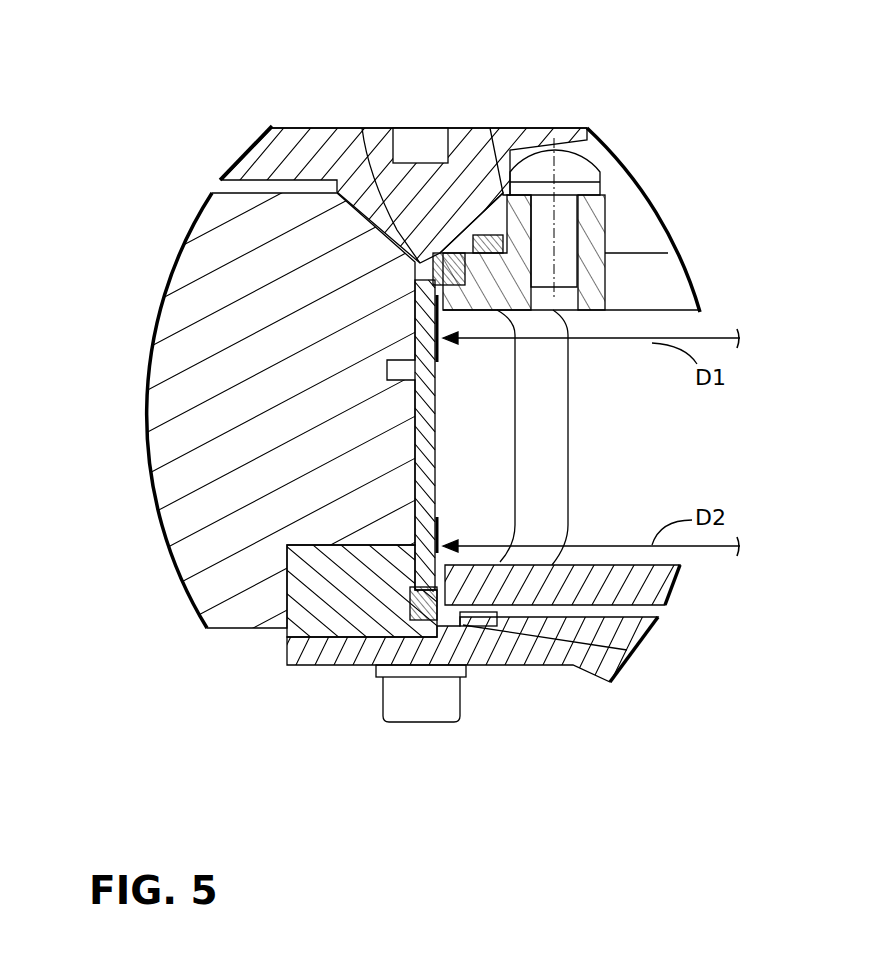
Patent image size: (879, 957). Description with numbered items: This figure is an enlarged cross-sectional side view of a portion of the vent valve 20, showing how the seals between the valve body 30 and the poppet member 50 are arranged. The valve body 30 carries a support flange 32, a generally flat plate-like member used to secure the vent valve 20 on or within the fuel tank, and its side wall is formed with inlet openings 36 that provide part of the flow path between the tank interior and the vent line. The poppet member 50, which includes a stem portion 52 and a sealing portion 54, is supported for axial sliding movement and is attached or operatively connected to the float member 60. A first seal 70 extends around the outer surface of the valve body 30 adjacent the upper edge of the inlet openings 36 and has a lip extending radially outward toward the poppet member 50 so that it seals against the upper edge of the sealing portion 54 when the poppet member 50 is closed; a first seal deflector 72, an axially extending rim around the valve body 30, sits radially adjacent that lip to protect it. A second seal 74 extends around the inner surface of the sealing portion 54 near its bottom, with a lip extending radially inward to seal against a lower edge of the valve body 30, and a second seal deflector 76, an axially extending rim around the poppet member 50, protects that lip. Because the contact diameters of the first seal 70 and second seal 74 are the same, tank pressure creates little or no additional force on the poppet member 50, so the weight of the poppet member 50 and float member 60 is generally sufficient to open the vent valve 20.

The vent valve 20 is at (645, 116).
The valve body 30 is at (592, 286).
The support flange 32 is at (303, 133).
The inlet openings 36 is at (556, 426).
The poppet member 50 is at (318, 615).
The stem portion 52 is at (590, 658).
The sealing portion 54 is at (422, 453).
The float member 60 is at (217, 308).
The first seal 70 is at (415, 280).
The first seal deflector 72 is at (365, 140).
The second seal 74 is at (417, 622).
The second seal deflector 76 is at (465, 616).